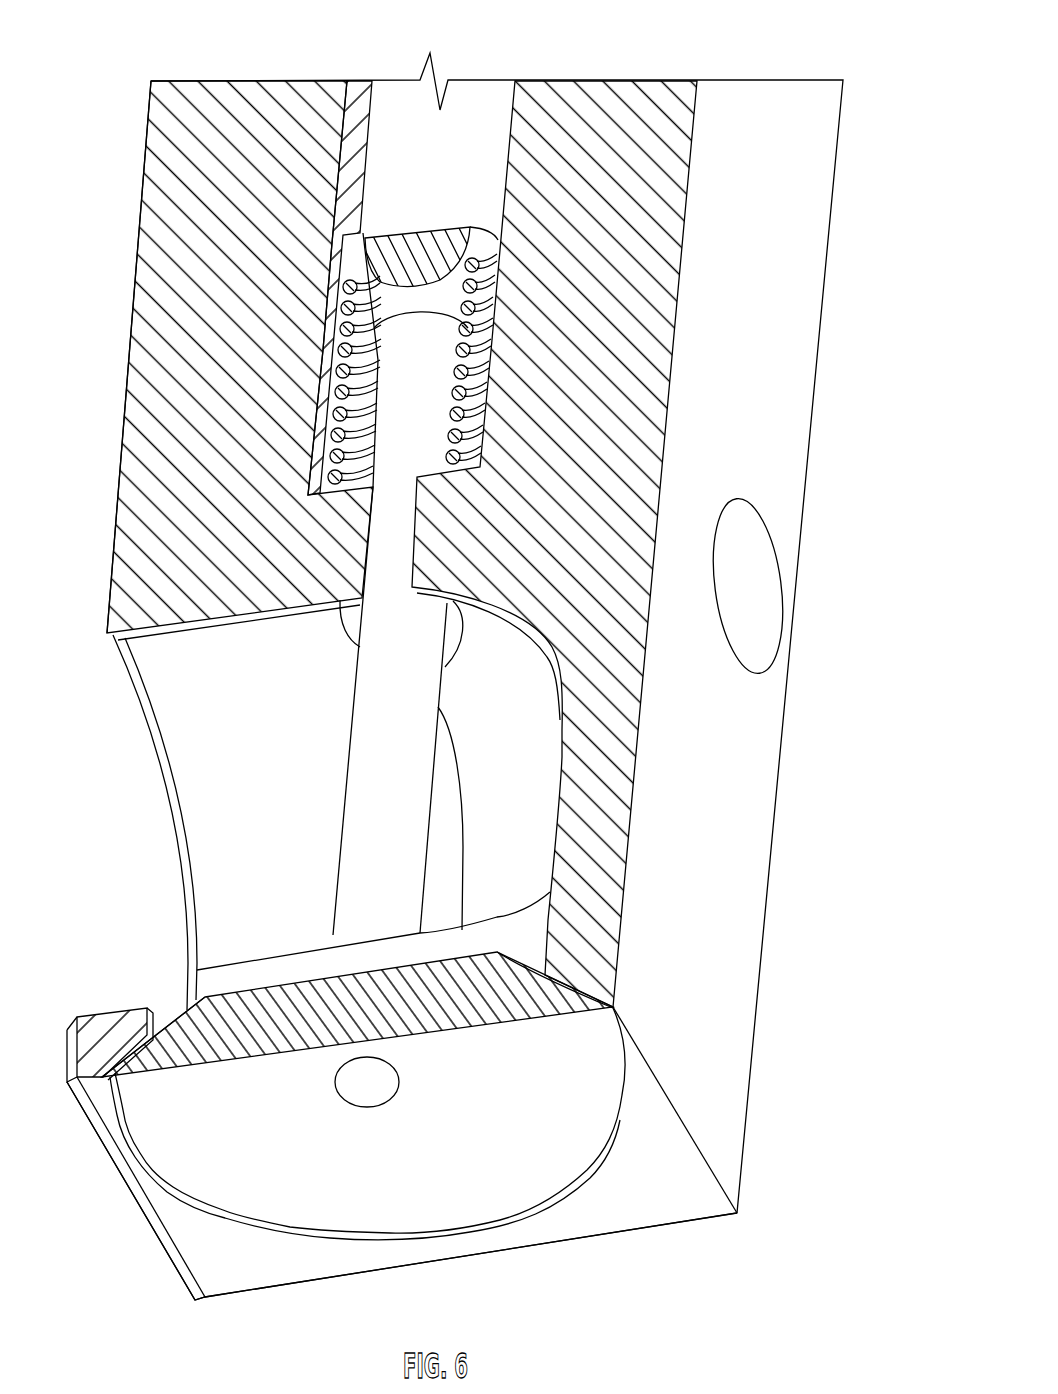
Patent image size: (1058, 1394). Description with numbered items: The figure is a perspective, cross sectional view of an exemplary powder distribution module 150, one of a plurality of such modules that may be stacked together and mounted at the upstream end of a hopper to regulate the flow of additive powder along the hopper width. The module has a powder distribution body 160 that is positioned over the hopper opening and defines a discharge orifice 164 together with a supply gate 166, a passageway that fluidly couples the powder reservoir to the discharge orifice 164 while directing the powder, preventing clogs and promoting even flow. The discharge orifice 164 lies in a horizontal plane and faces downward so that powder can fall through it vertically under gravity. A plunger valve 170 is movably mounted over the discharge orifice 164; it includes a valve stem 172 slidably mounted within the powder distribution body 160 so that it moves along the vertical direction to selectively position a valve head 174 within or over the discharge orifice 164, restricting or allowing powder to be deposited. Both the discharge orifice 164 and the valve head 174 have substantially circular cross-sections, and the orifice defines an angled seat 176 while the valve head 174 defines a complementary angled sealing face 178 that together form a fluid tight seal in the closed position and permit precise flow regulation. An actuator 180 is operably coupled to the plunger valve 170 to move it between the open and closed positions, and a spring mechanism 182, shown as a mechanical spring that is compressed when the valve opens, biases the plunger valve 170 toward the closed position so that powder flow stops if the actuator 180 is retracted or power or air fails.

The powder distribution module 150 is at (862, 70).
The powder distribution body 160 is at (655, 335).
The discharge orifice 164 is at (141, 1162).
The supply gate 166 is at (156, 927).
The plunger valve 170 is at (366, 769).
The valve stem 172 is at (373, 723).
The valve head 174 is at (437, 1163).
The angled seat 176 is at (126, 1068).
The angled sealing face 178 is at (170, 1012).
The actuator 180 is at (465, 130).
The spring mechanism 182 is at (497, 270).